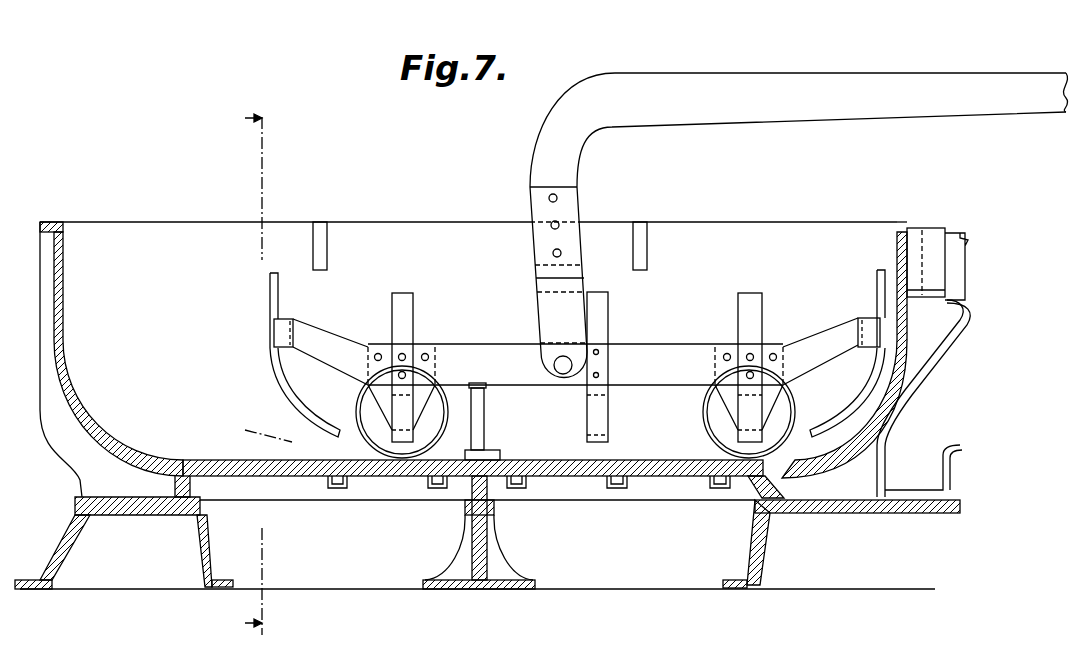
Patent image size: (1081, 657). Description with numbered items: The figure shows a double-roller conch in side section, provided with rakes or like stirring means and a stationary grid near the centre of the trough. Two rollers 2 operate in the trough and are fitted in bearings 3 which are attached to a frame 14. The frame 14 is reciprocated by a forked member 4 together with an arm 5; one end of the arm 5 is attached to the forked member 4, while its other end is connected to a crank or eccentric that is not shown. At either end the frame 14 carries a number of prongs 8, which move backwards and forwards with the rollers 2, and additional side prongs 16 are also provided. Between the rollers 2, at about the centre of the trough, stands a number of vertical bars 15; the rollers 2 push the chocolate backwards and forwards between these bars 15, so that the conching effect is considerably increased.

The rollers 2 is at (718, 428).
The bearings 3 is at (770, 398).
The forked member 4 is at (552, 300).
The arm 5 is at (797, 117).
The prongs 8 is at (297, 405).
The frame 14 is at (575, 364).
The vertical bars 15 is at (480, 420).
The side prongs 16 is at (397, 417).